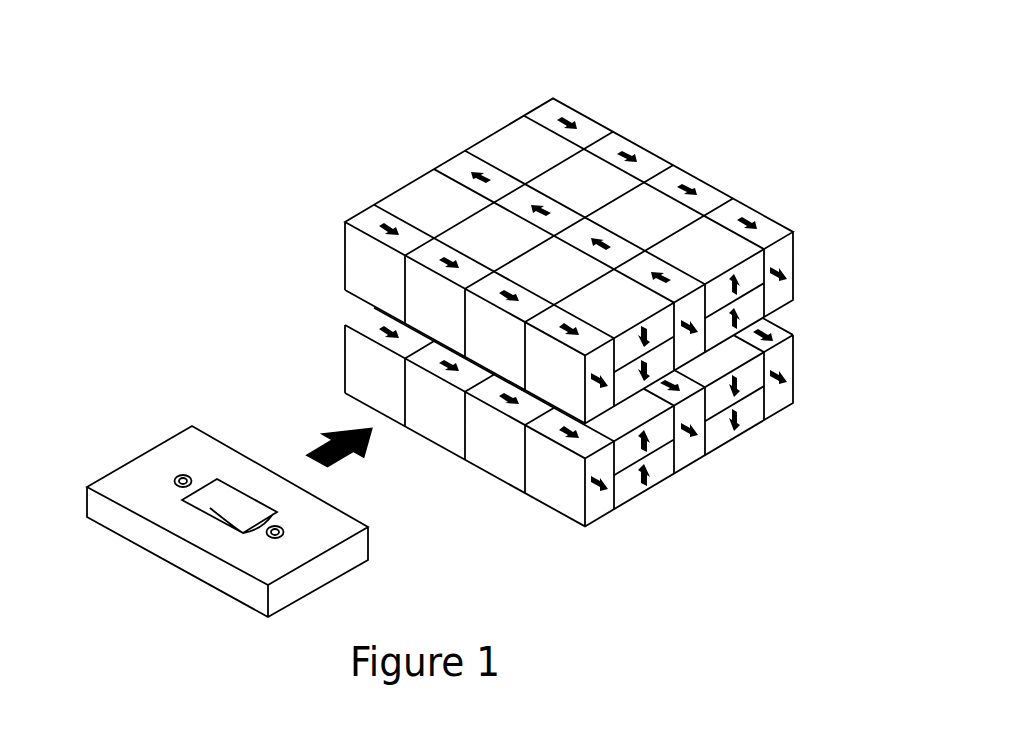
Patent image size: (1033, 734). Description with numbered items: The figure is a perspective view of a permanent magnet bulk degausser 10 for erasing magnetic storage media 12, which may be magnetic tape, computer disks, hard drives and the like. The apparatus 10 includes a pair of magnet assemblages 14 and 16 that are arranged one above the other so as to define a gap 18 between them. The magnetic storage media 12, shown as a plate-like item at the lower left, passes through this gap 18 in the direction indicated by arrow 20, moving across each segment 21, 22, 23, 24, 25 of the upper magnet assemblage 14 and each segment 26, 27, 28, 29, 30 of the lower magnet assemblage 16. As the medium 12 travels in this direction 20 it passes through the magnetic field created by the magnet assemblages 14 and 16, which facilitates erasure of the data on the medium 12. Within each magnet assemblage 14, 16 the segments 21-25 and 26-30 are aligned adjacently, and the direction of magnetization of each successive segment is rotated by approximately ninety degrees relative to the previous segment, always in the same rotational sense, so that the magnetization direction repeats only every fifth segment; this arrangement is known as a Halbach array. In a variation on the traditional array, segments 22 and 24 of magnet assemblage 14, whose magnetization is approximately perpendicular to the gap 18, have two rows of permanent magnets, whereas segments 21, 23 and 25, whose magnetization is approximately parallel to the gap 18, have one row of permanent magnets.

The permanent magnet bulk degausser 10 is at (373, 82).
The magnetic storage media 12 is at (150, 480).
The magnet assemblage 14 is at (833, 251).
The magnet assemblage 16 is at (821, 365).
The gap 18 is at (794, 312).
The arrow 20 is at (316, 446).
The segment 21 is at (363, 209).
The segment 22 is at (404, 183).
The segment 23 is at (451, 157).
The segment 24 is at (492, 136).
The segment 25 is at (550, 98).
The segment 26 is at (607, 513).
The segment 27 is at (650, 490).
The segment 28 is at (692, 467).
The segment 29 is at (736, 442).
The segment 30 is at (785, 415).